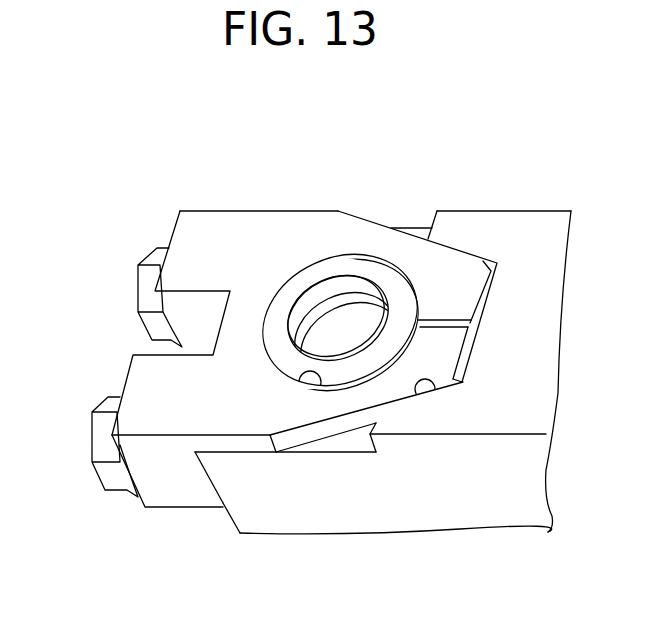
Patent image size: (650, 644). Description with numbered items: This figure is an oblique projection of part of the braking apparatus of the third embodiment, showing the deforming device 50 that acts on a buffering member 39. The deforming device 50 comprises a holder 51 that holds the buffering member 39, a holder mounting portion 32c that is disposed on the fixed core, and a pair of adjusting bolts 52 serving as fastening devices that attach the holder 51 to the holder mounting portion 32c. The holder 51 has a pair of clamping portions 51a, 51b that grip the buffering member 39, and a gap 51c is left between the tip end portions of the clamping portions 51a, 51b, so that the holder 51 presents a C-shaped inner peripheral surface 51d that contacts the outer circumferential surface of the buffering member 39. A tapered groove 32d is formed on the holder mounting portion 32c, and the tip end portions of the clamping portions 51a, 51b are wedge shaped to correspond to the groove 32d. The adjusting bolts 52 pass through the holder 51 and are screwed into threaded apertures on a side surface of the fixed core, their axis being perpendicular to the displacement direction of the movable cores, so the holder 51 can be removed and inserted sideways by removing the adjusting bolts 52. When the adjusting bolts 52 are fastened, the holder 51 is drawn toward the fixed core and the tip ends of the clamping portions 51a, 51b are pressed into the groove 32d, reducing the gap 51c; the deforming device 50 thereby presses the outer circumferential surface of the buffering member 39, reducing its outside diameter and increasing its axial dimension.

The deforming device 50 is at (240, 208).
The holder 51 is at (173, 508).
The clamping portion 51a is at (400, 248).
The clamping portion 51b is at (342, 405).
The gap 51c is at (447, 318).
The C-shaped inner peripheral surface 51d is at (321, 393).
The adjusting bolts 52 is at (102, 403).
The buffering member 39 is at (330, 275).
The holder mounting portion 32c is at (378, 488).
The tapered groove 32d is at (437, 390).